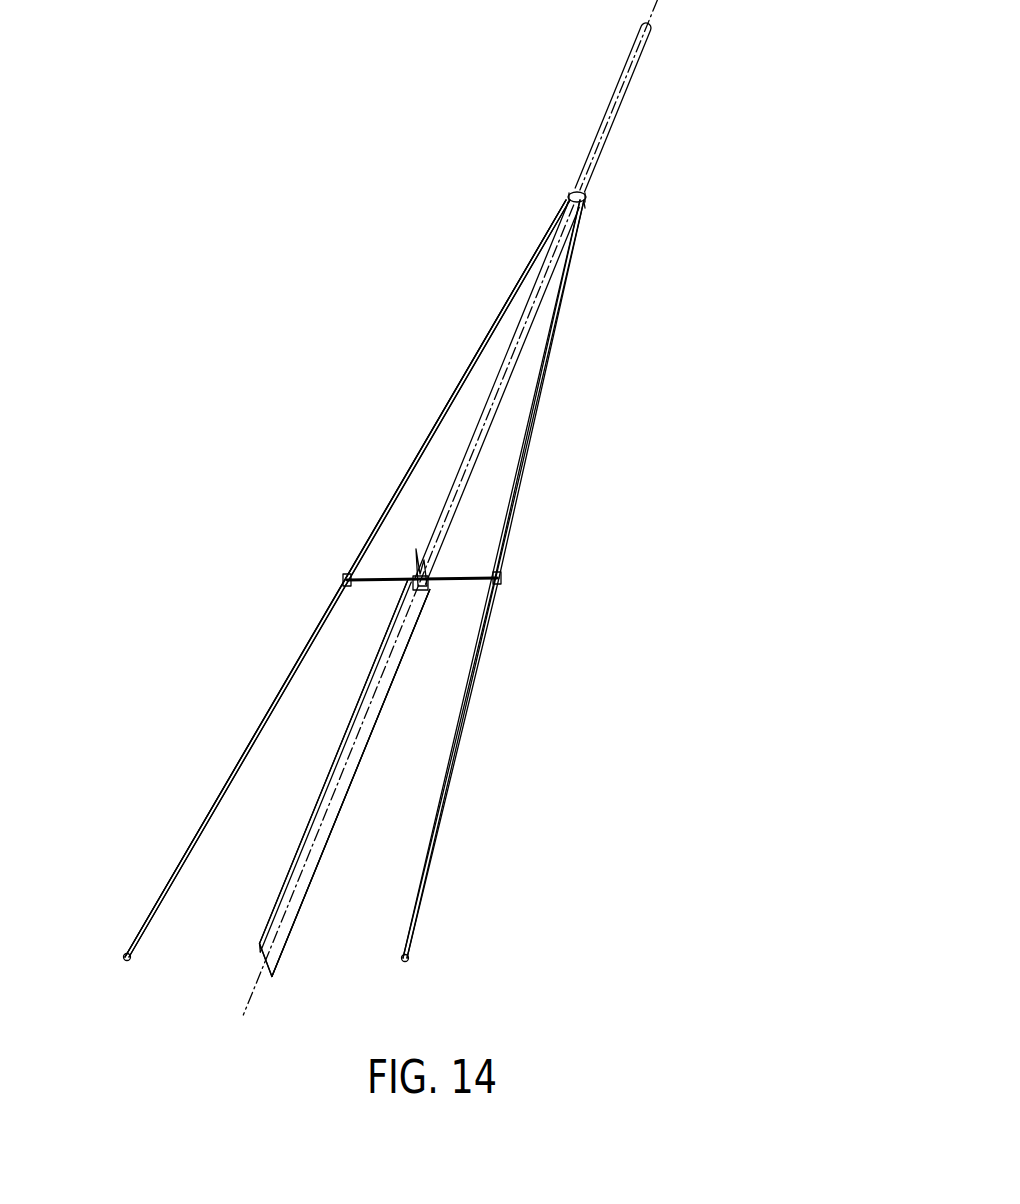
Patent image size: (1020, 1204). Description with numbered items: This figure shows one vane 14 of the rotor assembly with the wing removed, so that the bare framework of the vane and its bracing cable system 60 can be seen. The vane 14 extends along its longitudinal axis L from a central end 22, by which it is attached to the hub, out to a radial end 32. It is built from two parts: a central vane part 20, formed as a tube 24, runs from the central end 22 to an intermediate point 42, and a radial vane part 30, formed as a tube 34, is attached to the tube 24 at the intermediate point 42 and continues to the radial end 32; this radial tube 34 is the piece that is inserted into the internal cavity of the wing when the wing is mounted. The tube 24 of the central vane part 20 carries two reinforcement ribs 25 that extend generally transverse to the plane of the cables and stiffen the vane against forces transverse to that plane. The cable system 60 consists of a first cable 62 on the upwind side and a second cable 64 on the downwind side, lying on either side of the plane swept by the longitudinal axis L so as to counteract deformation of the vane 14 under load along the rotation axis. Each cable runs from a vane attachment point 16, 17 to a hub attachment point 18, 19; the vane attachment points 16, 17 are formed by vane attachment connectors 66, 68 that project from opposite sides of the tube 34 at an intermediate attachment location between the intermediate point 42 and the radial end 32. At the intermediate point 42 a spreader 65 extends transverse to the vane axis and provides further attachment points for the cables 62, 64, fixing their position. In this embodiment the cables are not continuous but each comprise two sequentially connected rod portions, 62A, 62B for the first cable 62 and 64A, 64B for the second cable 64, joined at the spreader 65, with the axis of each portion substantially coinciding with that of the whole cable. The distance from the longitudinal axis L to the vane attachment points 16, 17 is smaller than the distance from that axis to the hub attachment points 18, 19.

The vane 14 is at (347, 486).
The vane attachment point 16 is at (549, 212).
The vane attachment point 17 is at (591, 211).
The hub attachment point 18 is at (125, 952).
The hub attachment point 19 is at (410, 955).
The central vane part 20 is at (286, 821).
The central end 22 is at (262, 951).
The tube 24 is at (306, 858).
The pole flanges 25 is at (283, 899).
The radial vane part 30 is at (428, 396).
The radial end 32 is at (662, 33).
The tube 34 is at (478, 455).
The intermediate point 42 is at (428, 596).
The cable system 60 is at (541, 598).
The first cable 62 is at (312, 636).
The cable portion 62A is at (288, 708).
The cable portion 62B is at (506, 312).
The second cable 64 is at (472, 712).
The cable portion 64A is at (444, 802).
The cable portion 64B is at (561, 322).
The spreader 65 is at (438, 580).
The vane attachment connector 66 is at (566, 198).
The vane attachment connector 68 is at (594, 197).
The longitudinal axis L is at (247, 999).